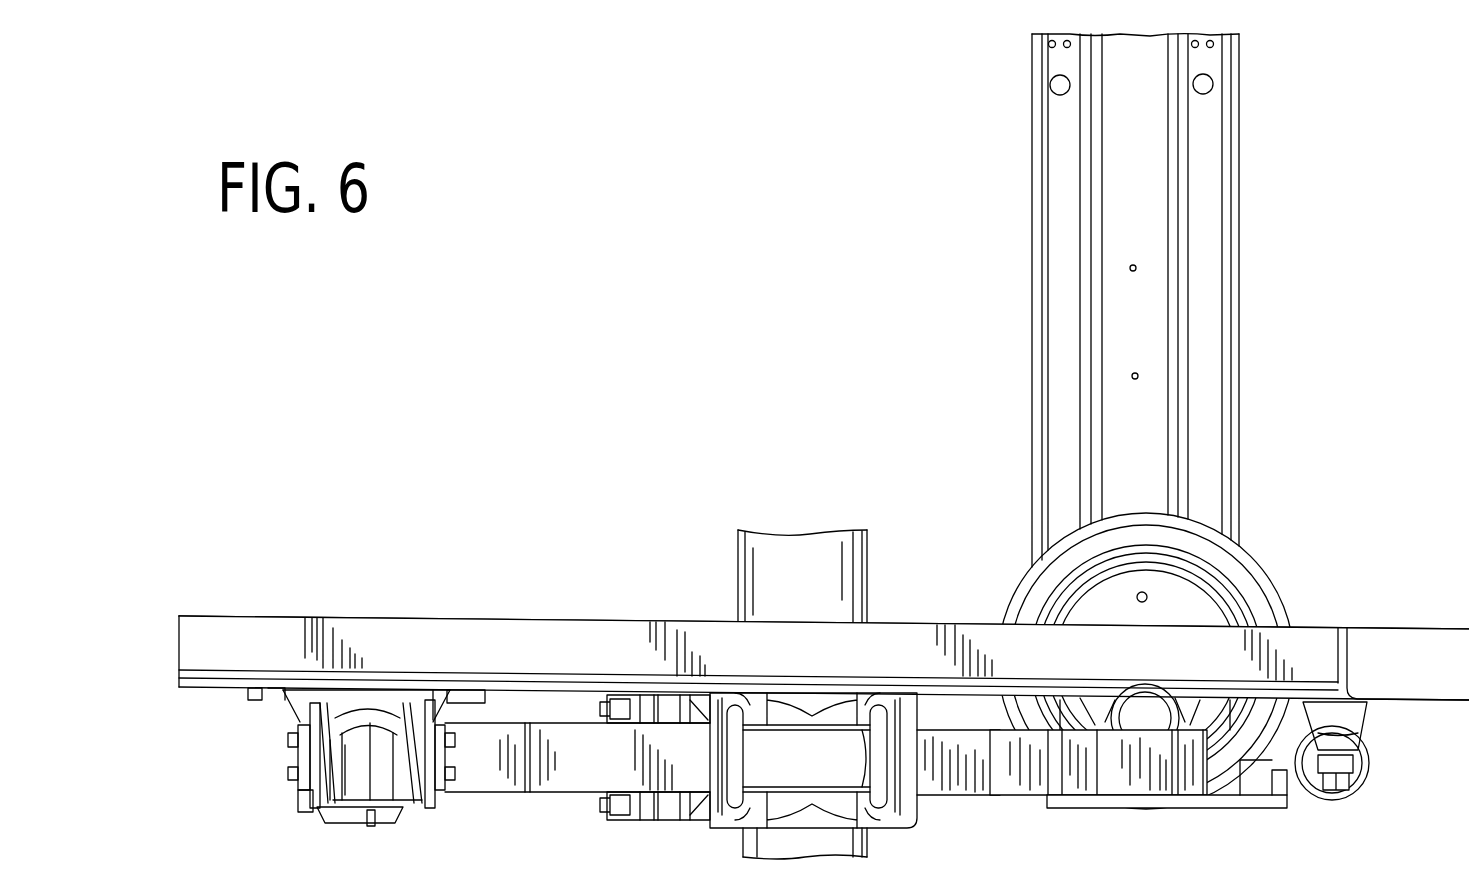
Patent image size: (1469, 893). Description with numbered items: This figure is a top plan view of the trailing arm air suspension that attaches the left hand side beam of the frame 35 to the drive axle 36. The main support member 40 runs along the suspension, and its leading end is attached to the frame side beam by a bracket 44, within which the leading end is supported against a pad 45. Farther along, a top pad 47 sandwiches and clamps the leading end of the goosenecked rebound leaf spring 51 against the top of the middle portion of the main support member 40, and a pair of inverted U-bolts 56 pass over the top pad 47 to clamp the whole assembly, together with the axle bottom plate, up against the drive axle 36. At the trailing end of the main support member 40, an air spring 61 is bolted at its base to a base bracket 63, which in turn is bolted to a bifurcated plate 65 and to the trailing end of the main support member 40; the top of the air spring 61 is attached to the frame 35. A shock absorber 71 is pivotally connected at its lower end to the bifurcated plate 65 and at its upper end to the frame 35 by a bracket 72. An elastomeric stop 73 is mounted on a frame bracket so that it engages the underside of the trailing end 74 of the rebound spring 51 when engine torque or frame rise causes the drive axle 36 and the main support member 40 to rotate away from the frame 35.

The frame 35 is at (452, 616).
The drive axle 36 is at (812, 858).
The main support member 40 is at (562, 793).
The bracket 44 is at (272, 700).
The pad 45 is at (312, 806).
The top pad 47 is at (786, 792).
The rebound leaf spring 51 is at (955, 796).
The inverted U-bolts 56 is at (718, 808).
The air spring 61 is at (1265, 568).
The base bracket 63 is at (1243, 432).
The bifurcated plate 65 is at (1232, 809).
The shock absorber 71 is at (1369, 760).
The bracket 72 is at (1362, 715).
The elastomeric stop 73 is at (1158, 702).
The trailing end 74 is at (1010, 797).